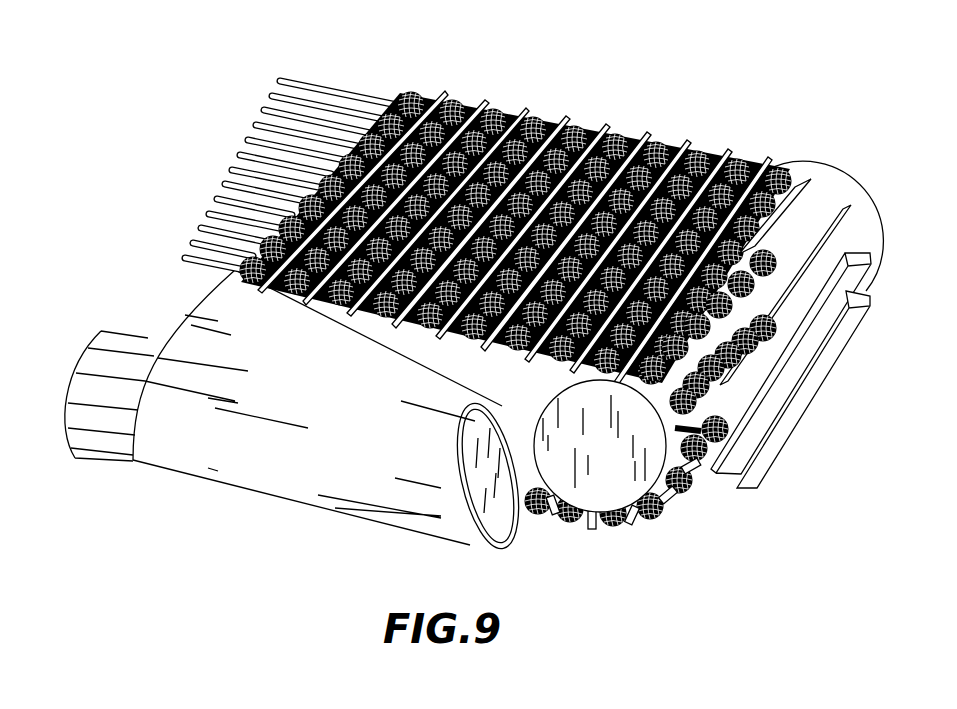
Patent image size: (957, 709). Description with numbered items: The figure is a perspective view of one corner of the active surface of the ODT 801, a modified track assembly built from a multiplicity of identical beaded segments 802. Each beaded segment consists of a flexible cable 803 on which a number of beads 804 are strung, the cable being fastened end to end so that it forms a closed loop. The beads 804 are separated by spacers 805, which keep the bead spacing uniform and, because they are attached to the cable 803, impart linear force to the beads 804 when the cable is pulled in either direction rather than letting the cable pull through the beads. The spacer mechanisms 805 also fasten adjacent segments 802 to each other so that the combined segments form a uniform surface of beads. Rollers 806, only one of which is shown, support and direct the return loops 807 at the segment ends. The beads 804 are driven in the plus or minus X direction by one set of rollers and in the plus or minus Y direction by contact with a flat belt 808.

The active surface of the ODT 801 is at (527, 120).
The beaded segments 802 is at (313, 293).
The flexible cable 803 is at (180, 251).
The beads 804 is at (235, 268).
The spacers 805 is at (820, 273).
The rollers 806 is at (600, 470).
The return loops 807 is at (700, 457).
The flat belt 808 is at (267, 473).